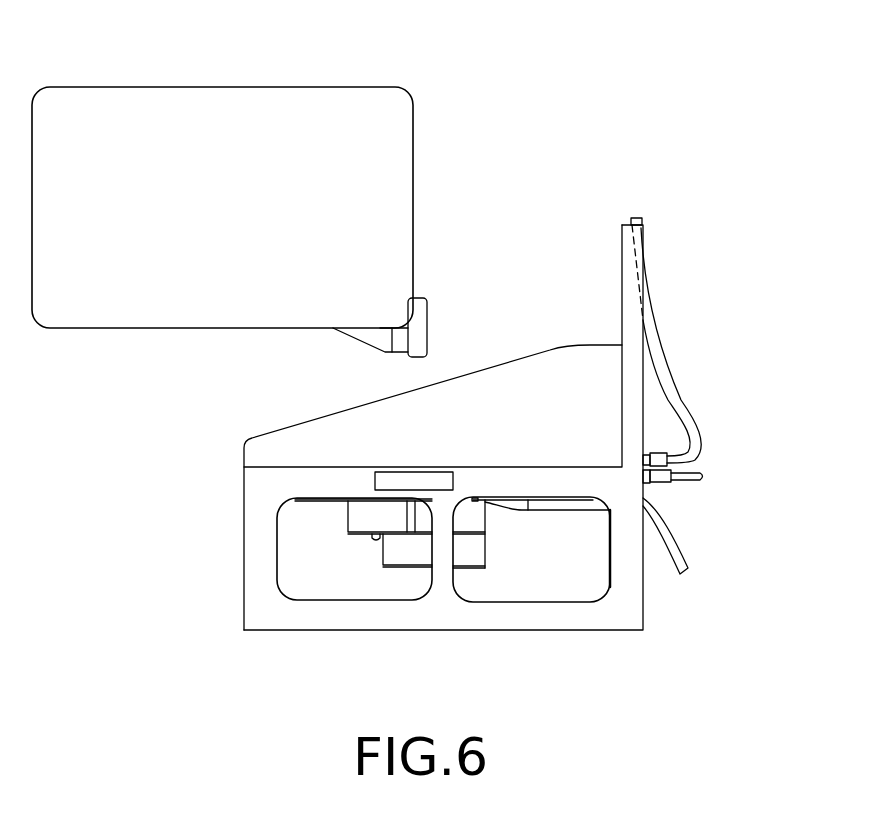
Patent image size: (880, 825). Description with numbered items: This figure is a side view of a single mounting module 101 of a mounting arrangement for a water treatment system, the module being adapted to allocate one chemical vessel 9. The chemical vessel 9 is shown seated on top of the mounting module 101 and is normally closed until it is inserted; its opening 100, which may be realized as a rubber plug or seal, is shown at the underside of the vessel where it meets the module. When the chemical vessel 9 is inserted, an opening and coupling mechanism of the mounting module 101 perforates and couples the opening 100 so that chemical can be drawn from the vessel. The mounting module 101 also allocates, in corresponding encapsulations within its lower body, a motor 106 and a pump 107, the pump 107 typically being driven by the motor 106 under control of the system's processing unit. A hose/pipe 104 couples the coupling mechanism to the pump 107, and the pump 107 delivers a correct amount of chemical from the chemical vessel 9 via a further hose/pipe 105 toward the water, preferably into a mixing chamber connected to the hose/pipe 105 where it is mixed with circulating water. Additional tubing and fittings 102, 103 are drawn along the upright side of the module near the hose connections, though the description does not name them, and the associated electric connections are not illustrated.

The chemical vessel 9 is at (413, 203).
The opening 100 is at (427, 316).
The mounting module 101 is at (252, 440).
The tube 102 is at (652, 317).
The connector 103 is at (666, 455).
The hose/pipe 104 is at (705, 476).
The hose/pipe 105 is at (685, 548).
The motor 106 is at (383, 562).
The pump 107 is at (322, 499).